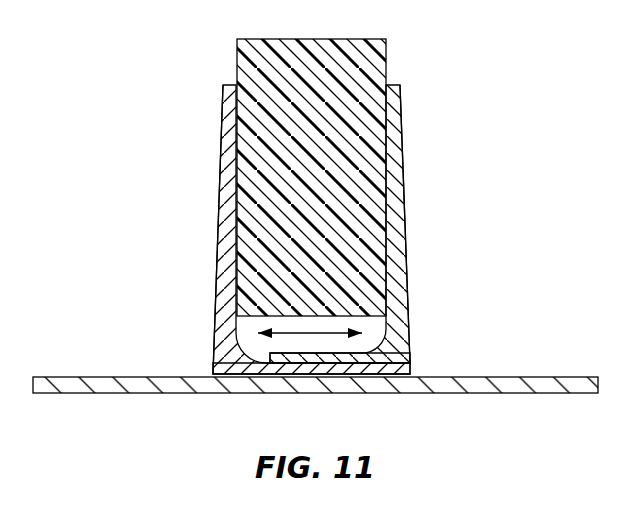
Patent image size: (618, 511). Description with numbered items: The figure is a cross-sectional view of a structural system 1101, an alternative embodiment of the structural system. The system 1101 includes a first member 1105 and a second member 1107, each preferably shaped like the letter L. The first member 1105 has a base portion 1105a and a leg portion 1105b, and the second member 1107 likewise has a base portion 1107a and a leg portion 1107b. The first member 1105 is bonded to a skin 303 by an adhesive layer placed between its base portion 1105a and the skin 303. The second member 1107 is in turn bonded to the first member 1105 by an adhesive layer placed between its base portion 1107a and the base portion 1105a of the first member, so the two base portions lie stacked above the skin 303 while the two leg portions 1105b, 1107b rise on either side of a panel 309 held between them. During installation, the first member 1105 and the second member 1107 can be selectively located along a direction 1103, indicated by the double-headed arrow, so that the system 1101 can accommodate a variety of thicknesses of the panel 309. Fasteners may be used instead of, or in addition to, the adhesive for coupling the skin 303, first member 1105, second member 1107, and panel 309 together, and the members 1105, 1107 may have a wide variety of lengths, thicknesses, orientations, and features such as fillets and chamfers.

The system 1101 is at (136, 123).
The skin 303 is at (180, 393).
The panel 309 is at (386, 63).
The direction 1103 is at (318, 332).
The first member 1105 is at (251, 259).
The base portion 1105a is at (340, 368).
The leg portion 1105b is at (217, 248).
The second member 1107 is at (406, 261).
The base portion 1107a is at (358, 360).
The leg portion 1107b is at (403, 147).